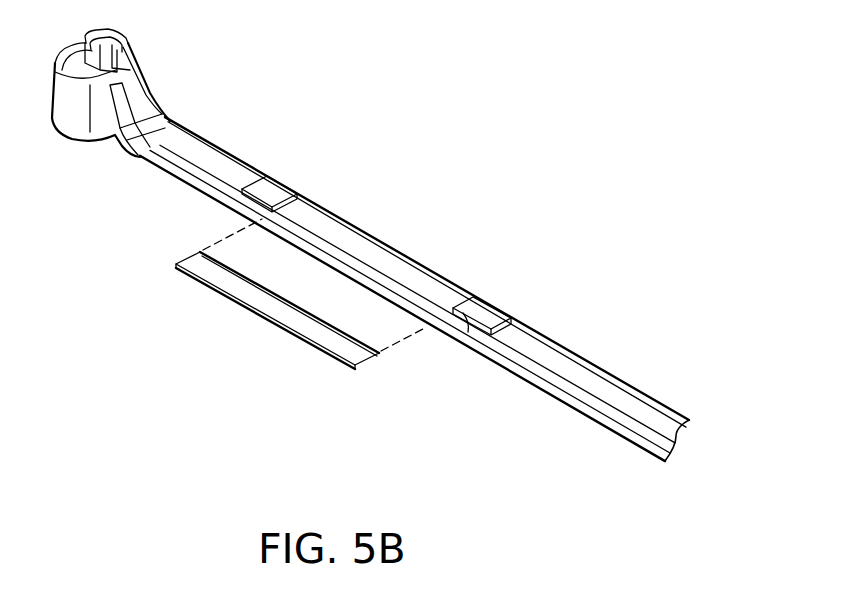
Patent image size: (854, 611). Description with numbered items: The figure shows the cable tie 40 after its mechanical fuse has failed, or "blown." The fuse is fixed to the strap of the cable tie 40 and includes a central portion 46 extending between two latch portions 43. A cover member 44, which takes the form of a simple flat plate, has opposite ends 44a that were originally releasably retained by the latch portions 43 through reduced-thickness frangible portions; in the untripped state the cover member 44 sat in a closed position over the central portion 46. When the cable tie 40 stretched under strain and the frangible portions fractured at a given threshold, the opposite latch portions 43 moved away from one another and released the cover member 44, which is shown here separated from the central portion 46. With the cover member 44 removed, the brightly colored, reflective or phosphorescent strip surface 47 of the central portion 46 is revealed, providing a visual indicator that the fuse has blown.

The cable tie 40 is at (433, 143).
The latch portion 43 is at (277, 191).
The cover member 44 is at (267, 320).
The opposite end of cover member 44a is at (190, 256).
The central portion 46 is at (350, 227).
The strip surface 47 is at (448, 280).